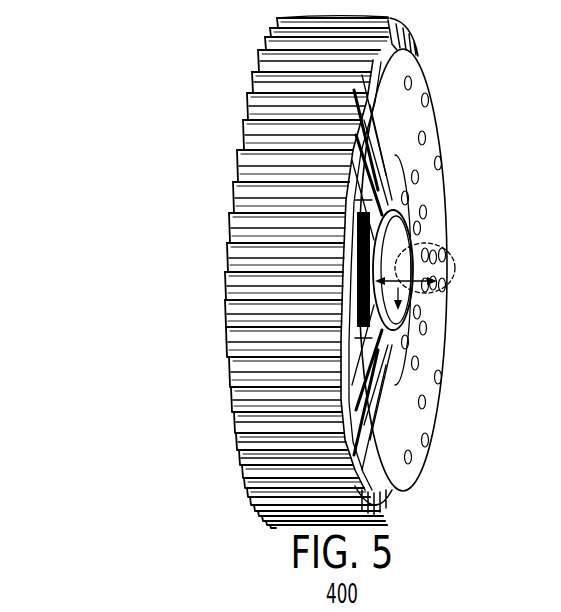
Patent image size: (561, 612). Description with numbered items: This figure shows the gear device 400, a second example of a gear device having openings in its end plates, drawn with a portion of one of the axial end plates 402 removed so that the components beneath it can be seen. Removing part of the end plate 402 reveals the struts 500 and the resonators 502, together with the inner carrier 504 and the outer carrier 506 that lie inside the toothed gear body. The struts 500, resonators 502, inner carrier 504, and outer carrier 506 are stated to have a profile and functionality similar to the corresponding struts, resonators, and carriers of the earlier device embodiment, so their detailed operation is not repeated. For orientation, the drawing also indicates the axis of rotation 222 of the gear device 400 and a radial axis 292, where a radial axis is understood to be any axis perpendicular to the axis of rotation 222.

The gear device 400 is at (207, 98).
The axial end plate 402 is at (449, 209).
The strut 500 is at (383, 128).
The resonator 502 is at (389, 200).
The inner carrier 504 is at (404, 330).
The axis of rotation 222 is at (440, 243).
The radial axis 292 is at (405, 294).
The outer carrier 506 is at (388, 488).